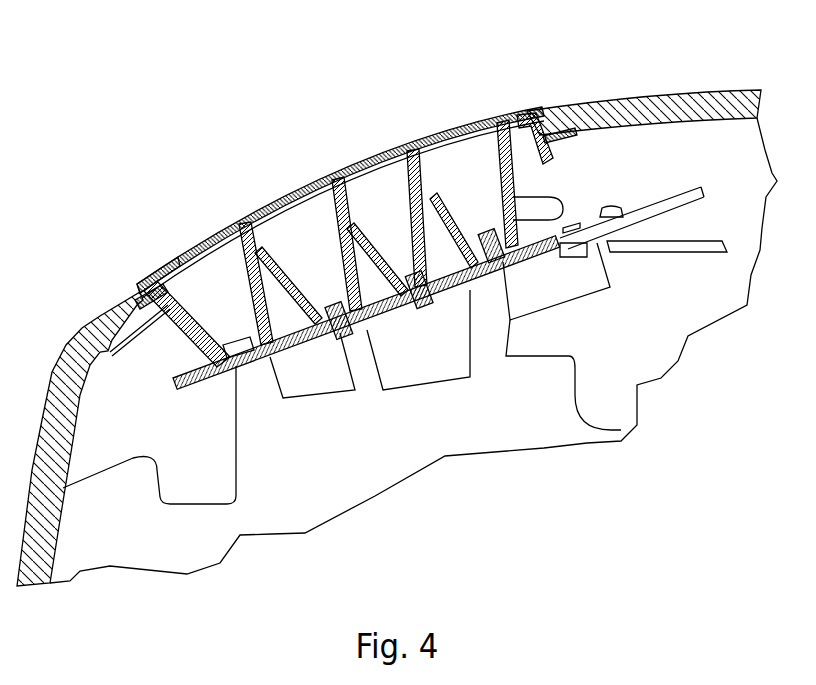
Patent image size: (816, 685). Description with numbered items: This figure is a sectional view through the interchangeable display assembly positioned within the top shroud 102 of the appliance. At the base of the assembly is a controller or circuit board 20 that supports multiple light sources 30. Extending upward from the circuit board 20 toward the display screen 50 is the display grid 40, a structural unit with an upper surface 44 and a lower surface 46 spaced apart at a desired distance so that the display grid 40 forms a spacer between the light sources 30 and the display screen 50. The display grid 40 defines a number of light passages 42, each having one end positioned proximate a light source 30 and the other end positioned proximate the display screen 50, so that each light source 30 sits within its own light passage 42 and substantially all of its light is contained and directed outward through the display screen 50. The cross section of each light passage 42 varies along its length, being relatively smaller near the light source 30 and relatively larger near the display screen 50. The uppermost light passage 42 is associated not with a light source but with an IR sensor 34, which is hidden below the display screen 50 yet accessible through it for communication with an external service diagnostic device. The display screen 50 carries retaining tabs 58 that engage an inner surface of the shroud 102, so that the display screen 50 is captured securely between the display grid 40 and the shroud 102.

The circuit board 20 is at (213, 378).
The light sources 30 is at (240, 345).
The IR sensor 34 is at (490, 240).
The display grid 40 is at (547, 181).
The light passages 42 is at (447, 160).
The upper surface 44 is at (150, 275).
The lower surface 46 is at (220, 357).
The display screen 50 is at (475, 118).
The retaining tabs 58 is at (110, 328).
The top shroud 102 is at (709, 90).